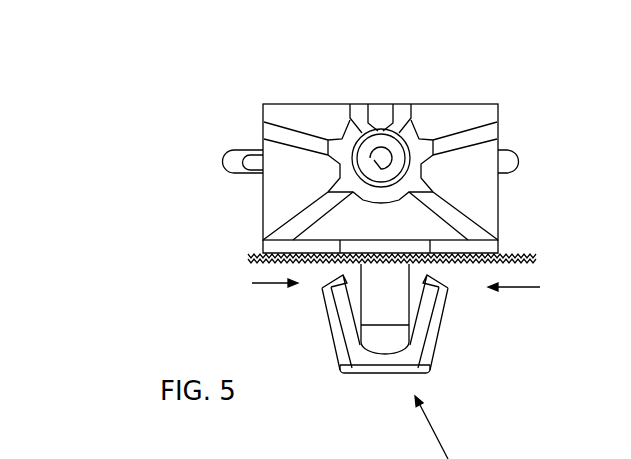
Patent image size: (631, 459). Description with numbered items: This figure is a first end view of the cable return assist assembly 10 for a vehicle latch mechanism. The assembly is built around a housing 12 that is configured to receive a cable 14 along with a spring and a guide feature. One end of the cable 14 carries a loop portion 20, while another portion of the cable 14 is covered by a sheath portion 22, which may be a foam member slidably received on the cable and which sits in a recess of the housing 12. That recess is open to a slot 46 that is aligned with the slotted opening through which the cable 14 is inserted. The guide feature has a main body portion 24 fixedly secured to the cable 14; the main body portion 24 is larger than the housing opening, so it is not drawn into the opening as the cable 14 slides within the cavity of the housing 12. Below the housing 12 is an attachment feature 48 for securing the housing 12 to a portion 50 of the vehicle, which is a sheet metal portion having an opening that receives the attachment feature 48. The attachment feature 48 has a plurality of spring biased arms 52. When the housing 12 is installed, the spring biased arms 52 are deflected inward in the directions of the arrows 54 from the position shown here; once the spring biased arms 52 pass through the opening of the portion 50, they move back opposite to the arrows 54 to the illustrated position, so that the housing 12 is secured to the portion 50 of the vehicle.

The cable return assist assembly 10 is at (490, 76).
The housing 12 is at (483, 155).
The cable 14 is at (381, 158).
The loop portion 20 is at (232, 148).
The sheath portion 22 is at (362, 148).
The slot 46 is at (387, 117).
The attachment feature 48 is at (333, 388).
The portion of the vehicle 50 is at (273, 261).
The spring biased arms 52 is at (332, 327).
The arrows 54 is at (378, 317).
The main body portion 24 is at (550, 458).